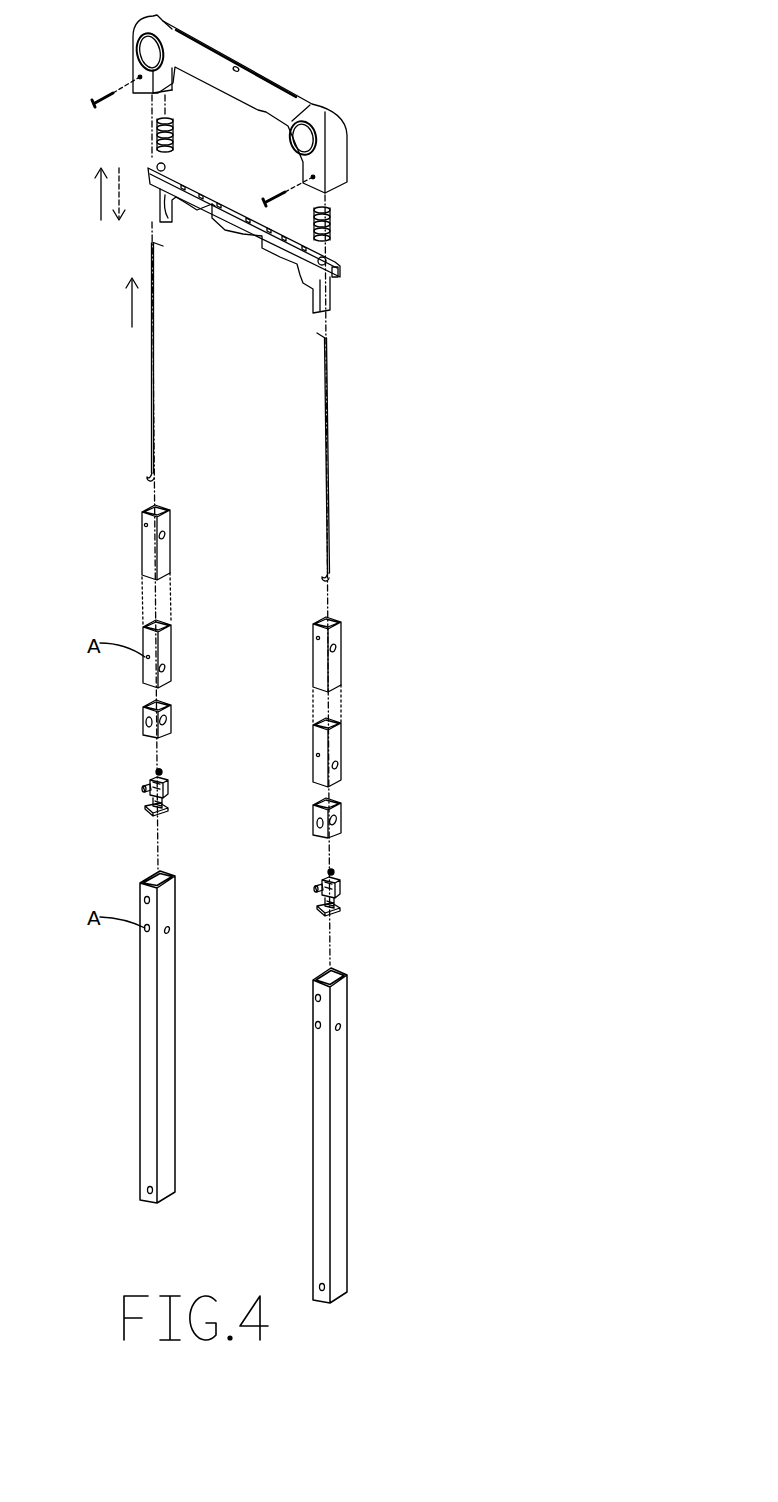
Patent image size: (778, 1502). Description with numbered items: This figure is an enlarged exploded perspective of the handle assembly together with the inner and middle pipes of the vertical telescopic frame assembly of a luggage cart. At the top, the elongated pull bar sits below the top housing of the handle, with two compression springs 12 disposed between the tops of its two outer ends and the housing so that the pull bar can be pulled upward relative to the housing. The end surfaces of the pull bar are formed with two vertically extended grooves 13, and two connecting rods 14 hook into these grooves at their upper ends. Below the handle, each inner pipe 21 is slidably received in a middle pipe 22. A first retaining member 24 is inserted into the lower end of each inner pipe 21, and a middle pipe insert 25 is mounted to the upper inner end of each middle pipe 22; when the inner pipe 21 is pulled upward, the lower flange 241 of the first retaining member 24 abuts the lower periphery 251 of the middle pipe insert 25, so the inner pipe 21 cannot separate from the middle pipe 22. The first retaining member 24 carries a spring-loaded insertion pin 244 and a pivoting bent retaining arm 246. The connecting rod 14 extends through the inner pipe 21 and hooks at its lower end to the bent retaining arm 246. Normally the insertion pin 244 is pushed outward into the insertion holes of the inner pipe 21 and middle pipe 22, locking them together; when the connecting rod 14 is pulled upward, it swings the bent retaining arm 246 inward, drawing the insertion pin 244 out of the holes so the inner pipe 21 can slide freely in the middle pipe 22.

The compression spring 12 is at (332, 222).
The vertically extended groove 13 is at (336, 284).
The connecting rod 14 is at (156, 374).
The inner pipe 21 is at (165, 558).
The middle pipe 22 is at (165, 1058).
The first retaining member 24 is at (167, 792).
The middle pipe insert 25 is at (168, 710).
The lower flange 241 is at (168, 810).
The insertion pin 244 is at (147, 793).
The bent retaining arm 246 is at (162, 770).
The lower periphery 251 is at (147, 742).